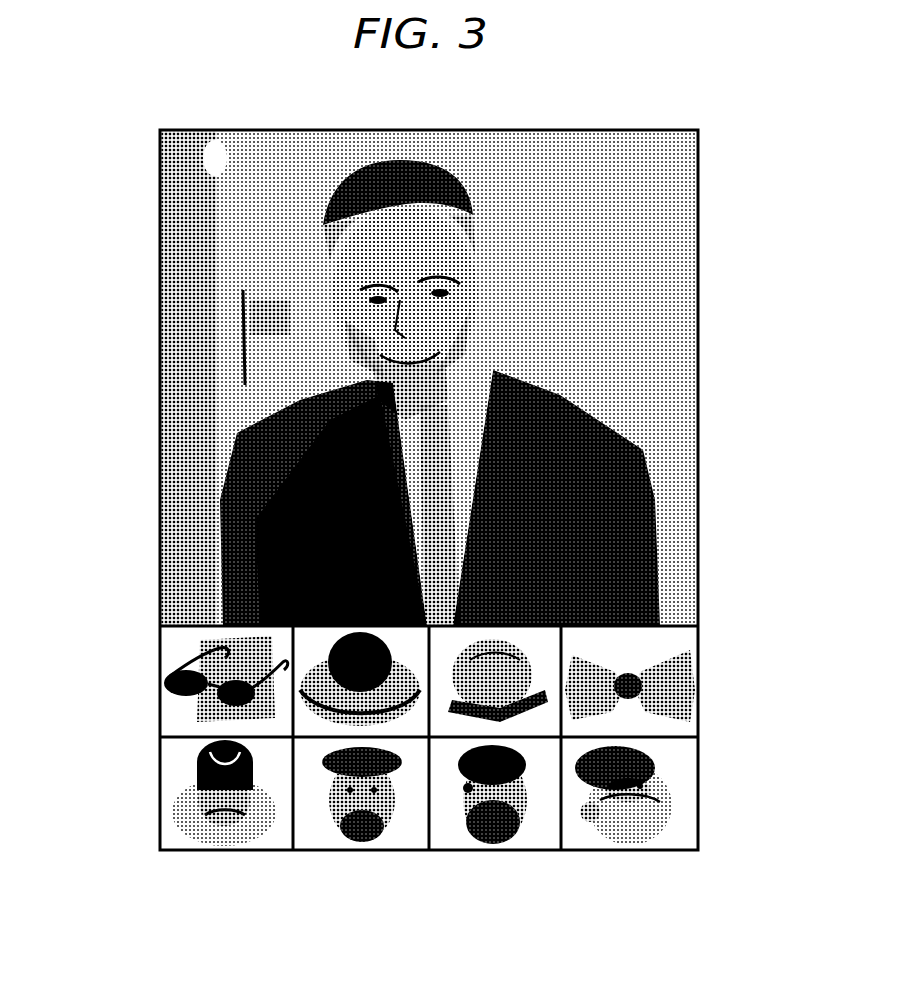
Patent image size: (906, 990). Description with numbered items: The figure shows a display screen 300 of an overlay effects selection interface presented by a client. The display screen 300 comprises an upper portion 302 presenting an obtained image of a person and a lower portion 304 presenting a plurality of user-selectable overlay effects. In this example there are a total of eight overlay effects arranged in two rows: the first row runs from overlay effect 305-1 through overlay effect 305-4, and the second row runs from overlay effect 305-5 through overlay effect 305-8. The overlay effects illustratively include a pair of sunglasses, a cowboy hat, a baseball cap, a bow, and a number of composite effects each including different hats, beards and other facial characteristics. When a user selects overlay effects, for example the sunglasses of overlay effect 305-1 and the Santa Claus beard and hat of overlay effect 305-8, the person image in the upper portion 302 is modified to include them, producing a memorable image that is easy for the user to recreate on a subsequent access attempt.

The display screen 300 is at (670, 92).
The upper portion 302 is at (157, 160).
The lower portion 304 is at (429, 738).
The overlay effect 305-1 is at (158, 648).
The overlay effect 305-4 is at (700, 648).
The overlay effect 305-5 is at (158, 812).
The overlay effect 305-8 is at (700, 808).